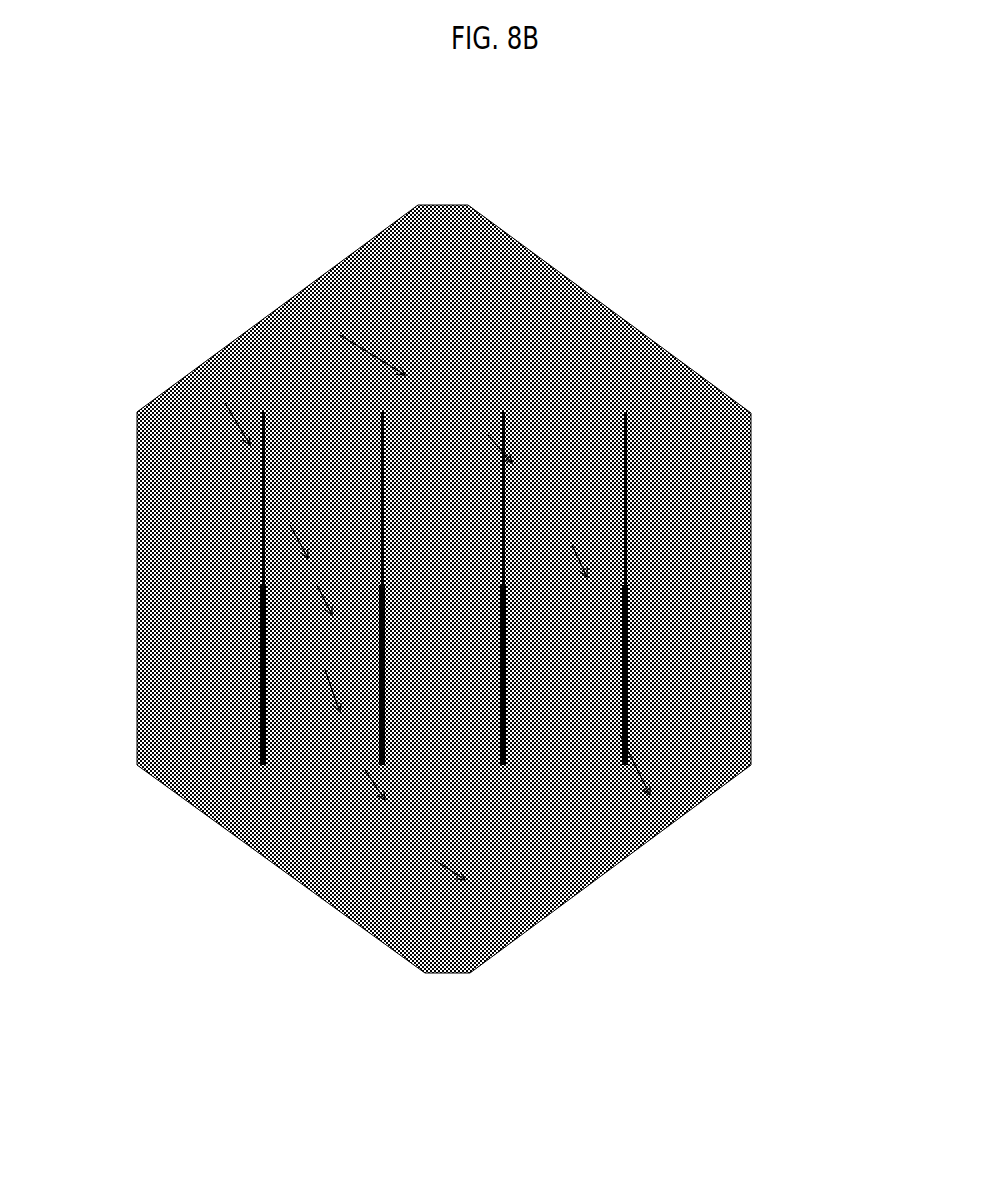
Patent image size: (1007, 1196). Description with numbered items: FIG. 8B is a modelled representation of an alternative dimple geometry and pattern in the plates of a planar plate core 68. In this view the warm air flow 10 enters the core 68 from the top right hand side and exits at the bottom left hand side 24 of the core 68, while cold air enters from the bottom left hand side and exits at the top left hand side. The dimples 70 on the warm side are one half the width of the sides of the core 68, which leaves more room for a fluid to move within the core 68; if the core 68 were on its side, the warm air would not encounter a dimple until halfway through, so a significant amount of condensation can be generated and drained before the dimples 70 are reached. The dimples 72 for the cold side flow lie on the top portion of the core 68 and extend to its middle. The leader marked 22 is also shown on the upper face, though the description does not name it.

The warm air flow 10 is at (291, 299).
The top surface 22 is at (643, 335).
The bottom left hand side 24 is at (617, 868).
The core 68 is at (138, 532).
The dimples 70 is at (138, 605).
The dimples 72 is at (257, 463).